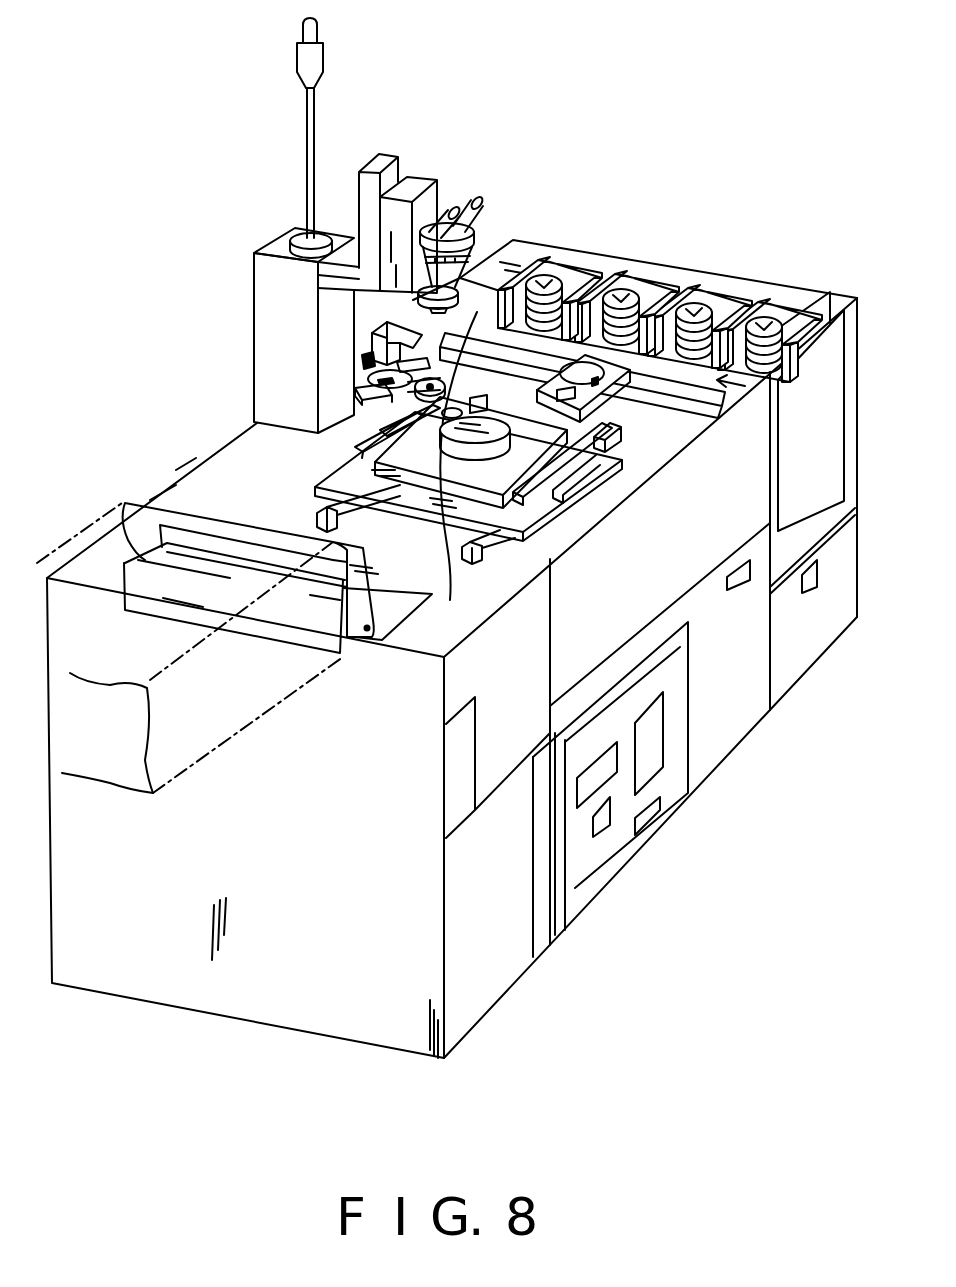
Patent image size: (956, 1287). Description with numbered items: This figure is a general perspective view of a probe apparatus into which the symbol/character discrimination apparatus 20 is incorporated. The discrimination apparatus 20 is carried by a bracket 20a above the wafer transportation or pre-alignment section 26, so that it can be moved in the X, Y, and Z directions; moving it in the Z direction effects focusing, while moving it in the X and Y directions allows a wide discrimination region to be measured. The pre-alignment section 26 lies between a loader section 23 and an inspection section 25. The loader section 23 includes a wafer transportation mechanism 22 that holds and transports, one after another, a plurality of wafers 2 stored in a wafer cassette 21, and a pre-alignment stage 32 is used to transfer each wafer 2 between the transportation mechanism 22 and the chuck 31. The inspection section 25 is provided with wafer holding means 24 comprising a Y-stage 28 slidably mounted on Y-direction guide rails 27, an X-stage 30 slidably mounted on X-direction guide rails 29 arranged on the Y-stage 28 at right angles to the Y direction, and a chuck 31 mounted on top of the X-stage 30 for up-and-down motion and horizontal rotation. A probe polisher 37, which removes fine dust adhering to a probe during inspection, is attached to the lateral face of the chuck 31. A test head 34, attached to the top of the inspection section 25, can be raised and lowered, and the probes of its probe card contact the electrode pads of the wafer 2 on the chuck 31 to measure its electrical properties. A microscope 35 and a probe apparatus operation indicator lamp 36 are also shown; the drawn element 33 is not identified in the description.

The wafer 2 is at (558, 274).
The discrimination apparatus 20 is at (377, 350).
The bracket 20a is at (368, 352).
The wafer cassette 21 is at (523, 286).
The wafer transportation mechanism 22 is at (623, 367).
The loader section 23 is at (735, 383).
The wafer holding means 24 is at (337, 462).
The inspection section 25 is at (212, 452).
The pre-alignment section 26 is at (353, 388).
The Y-direction guide rails 27 is at (323, 507).
The Y-stage 28 is at (533, 507).
The X-direction guide rails 29 is at (588, 468).
The X-stage 30 is at (617, 430).
The chuck 31 is at (453, 418).
The pre-alignment stage 32 is at (397, 400).
The roller bracket 33 is at (127, 543).
The test head 34 is at (177, 760).
The microscope 35 is at (482, 208).
The probe apparatus operation indicator lamp 36 is at (317, 40).
The probe polisher 37 is at (468, 443).